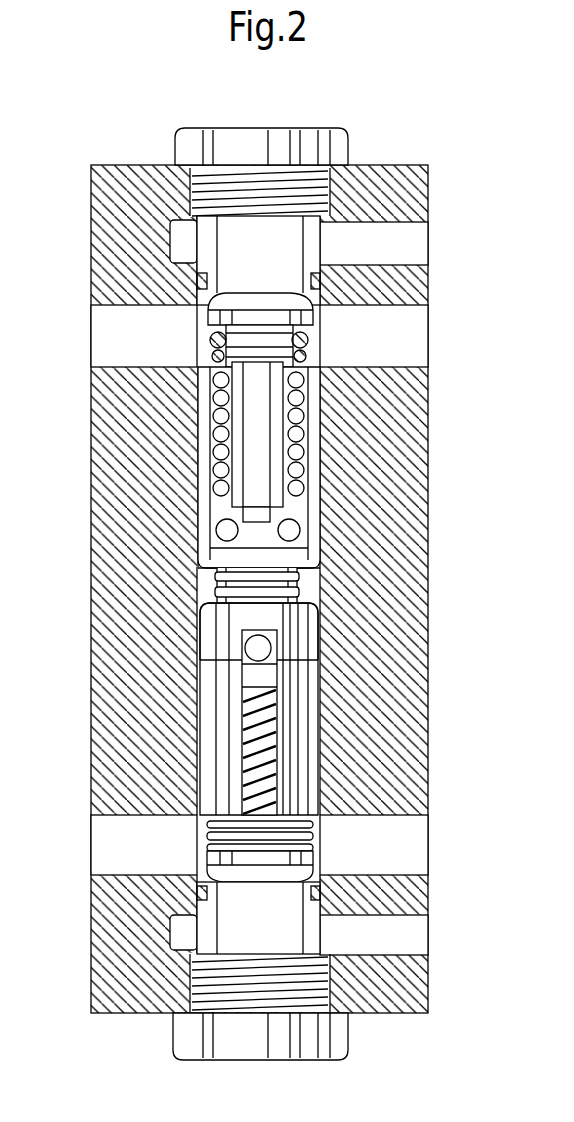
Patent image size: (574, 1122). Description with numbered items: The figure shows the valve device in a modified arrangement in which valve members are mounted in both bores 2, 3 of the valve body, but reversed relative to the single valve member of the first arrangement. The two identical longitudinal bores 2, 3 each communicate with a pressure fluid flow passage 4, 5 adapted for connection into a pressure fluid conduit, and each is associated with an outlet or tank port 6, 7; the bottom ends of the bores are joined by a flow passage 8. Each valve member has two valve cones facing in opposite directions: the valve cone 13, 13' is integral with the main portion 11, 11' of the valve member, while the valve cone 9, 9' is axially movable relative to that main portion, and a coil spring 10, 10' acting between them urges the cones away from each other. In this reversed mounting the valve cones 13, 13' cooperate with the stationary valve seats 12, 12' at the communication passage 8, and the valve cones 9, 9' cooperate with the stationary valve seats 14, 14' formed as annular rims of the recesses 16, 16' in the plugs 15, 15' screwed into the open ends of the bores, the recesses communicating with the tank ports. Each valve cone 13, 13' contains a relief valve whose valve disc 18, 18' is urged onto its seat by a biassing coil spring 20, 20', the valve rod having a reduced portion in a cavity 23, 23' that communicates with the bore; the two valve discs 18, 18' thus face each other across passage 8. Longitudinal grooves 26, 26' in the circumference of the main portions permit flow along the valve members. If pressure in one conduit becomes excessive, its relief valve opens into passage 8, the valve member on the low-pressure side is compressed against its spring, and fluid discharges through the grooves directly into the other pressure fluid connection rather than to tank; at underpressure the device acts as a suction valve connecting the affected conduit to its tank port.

The longitudinal bore 2 is at (218, 641).
The longitudinal bore 3 is at (205, 403).
The pressure fluid flow passage 4 is at (105, 850).
The pressure fluid flow passage 5 is at (110, 341).
The outlet or tank port 6 is at (400, 948).
The outlet or tank port 7 is at (408, 259).
The flow passage 8 is at (300, 596).
The valve cone 9 is at (330, 926).
The valve cone 9' is at (180, 267).
The coil spring 10 is at (343, 832).
The coil spring 10' is at (347, 343).
The main portion of the valve member 11 is at (170, 709).
The main portion of the valve member 11' is at (170, 467).
The stationary valve seat 12 is at (159, 599).
The stationary valve seat 12' is at (341, 567).
The valve cone 13 is at (149, 659).
The valve cone 13' is at (350, 534).
The stationary valve seat 14 is at (171, 892).
The stationary valve seat 14' is at (341, 293).
The plug 15 is at (260, 1055).
The plug 15' is at (261, 127).
The recess 16 is at (338, 918).
The recess 16' is at (350, 254).
The valve disc 18 is at (160, 592).
The valve disc 18' is at (160, 569).
The biassing coil spring 20 is at (360, 722).
The biassing coil spring 20' is at (358, 434).
The cavity 23 is at (362, 640).
The cavity 23' is at (363, 492).
The longitudinal grooves or flow passages 26 is at (361, 752).
The longitudinal grooves or flow passages 26' is at (163, 434).